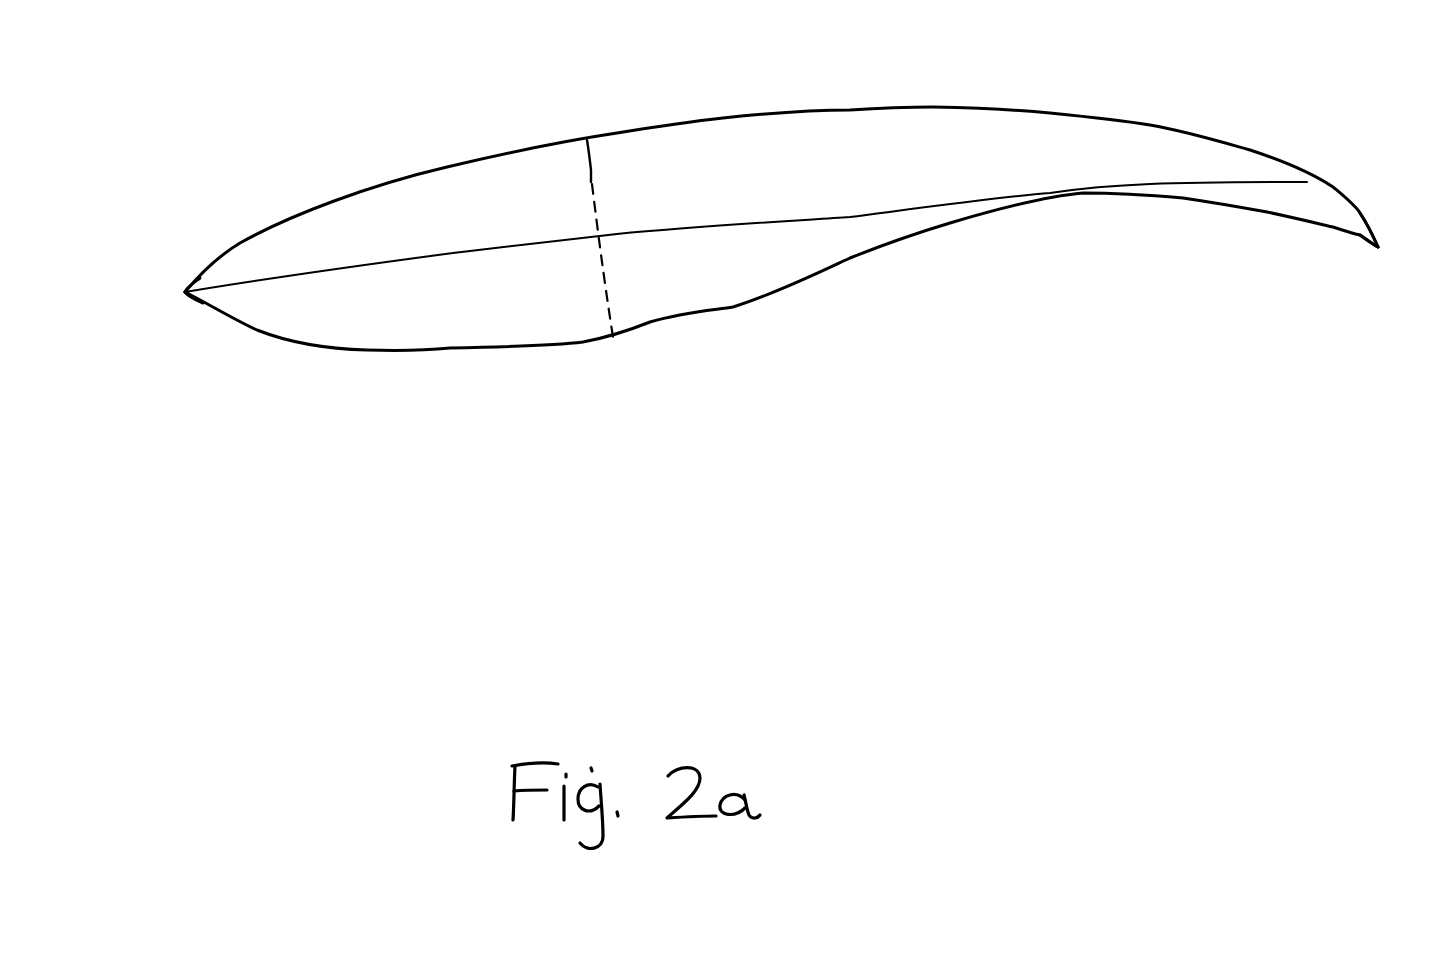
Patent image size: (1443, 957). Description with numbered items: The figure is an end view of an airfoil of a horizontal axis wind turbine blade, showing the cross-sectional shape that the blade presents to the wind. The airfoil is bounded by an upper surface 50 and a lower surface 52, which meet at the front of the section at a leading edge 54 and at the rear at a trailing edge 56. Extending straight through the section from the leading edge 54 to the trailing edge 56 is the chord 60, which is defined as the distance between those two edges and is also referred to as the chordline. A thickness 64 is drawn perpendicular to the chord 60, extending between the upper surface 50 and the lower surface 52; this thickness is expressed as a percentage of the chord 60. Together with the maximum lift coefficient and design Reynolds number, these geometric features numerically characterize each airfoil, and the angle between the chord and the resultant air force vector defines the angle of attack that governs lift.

The upper surface 50 is at (723, 118).
The lower surface 52 is at (705, 317).
The leading edge 54 is at (186, 282).
The trailing edge 56 is at (1330, 185).
The chord 60 is at (453, 253).
The thickness 64 is at (592, 183).